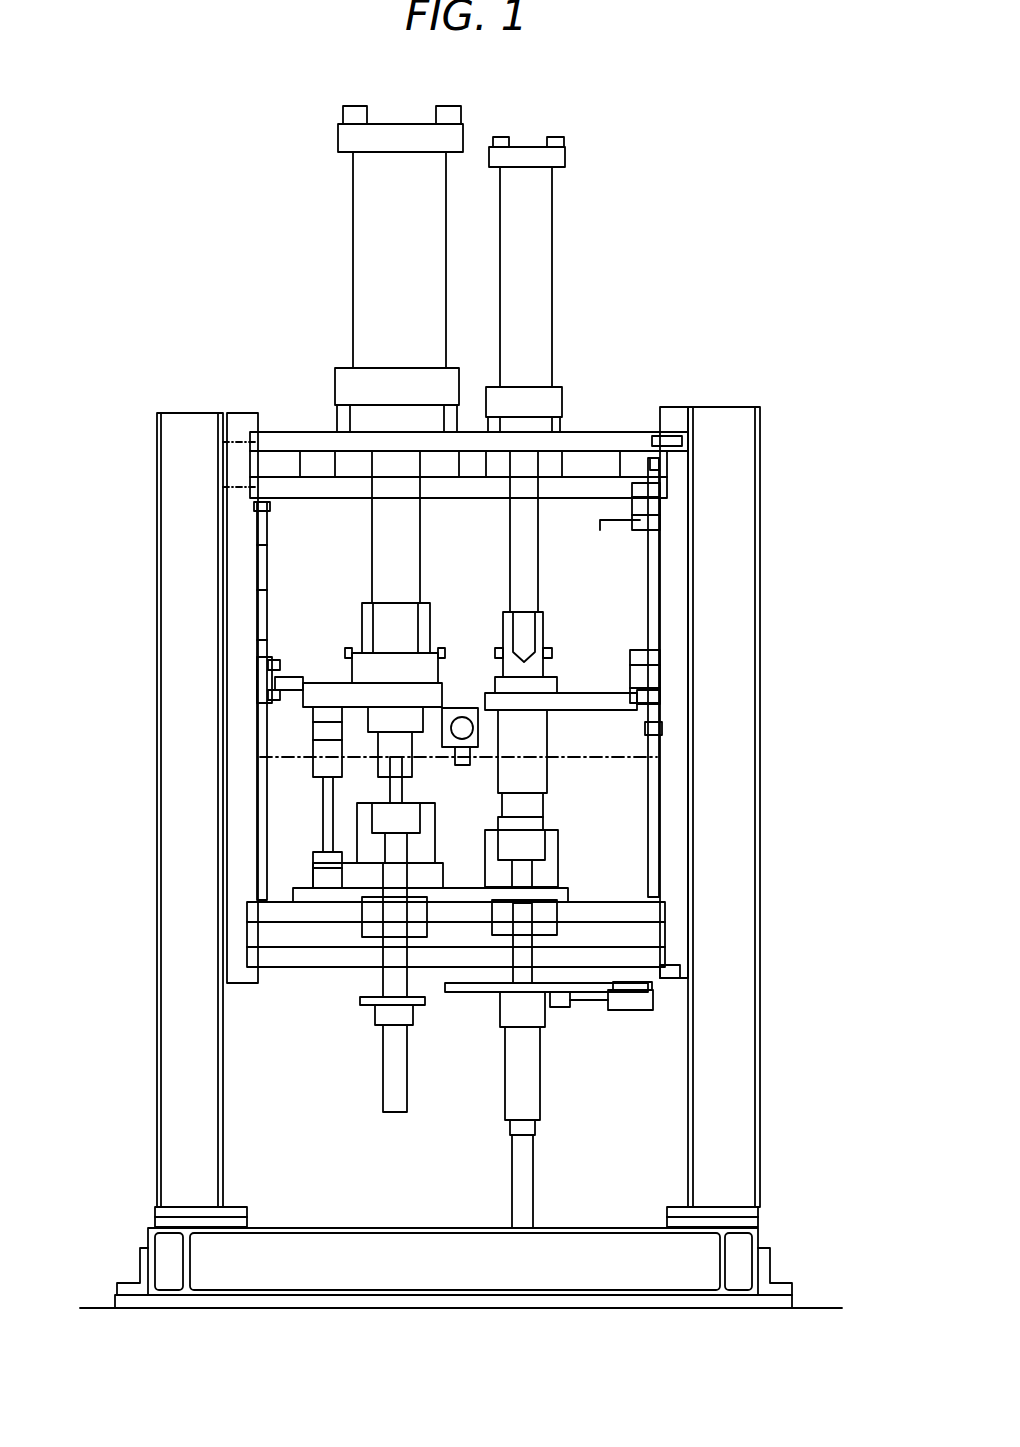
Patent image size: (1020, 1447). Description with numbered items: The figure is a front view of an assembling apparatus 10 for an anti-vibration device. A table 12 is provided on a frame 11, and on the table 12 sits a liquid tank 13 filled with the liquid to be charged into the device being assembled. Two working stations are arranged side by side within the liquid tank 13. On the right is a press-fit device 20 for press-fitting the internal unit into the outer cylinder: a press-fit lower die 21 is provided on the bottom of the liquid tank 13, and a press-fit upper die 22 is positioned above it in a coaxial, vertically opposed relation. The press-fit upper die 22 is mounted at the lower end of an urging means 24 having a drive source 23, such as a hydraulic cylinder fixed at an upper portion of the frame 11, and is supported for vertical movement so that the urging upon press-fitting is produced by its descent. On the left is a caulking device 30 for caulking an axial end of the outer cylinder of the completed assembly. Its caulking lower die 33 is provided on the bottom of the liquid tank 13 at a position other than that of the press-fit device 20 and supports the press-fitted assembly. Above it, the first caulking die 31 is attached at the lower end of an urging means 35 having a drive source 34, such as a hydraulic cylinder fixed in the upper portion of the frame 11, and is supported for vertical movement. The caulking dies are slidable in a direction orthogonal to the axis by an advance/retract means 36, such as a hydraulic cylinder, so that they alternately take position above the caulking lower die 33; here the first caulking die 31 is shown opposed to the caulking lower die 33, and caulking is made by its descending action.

The assembling apparatus 10 is at (208, 153).
The frame 11 is at (738, 607).
The table 12 is at (302, 938).
The liquid tank 13 is at (275, 818).
The press-fit device 20 is at (563, 665).
The press-fit lower die 21 is at (553, 843).
The press-fit upper die 22 is at (533, 803).
The drive source 23 is at (537, 258).
The urging means 24 is at (563, 362).
The caulking device 30 is at (328, 662).
The first caulking die 31 is at (375, 793).
The caulking lower die 33 is at (357, 828).
The drive source 34 is at (373, 257).
The urging means 35 is at (332, 343).
The advance/retract means 36 is at (470, 705).